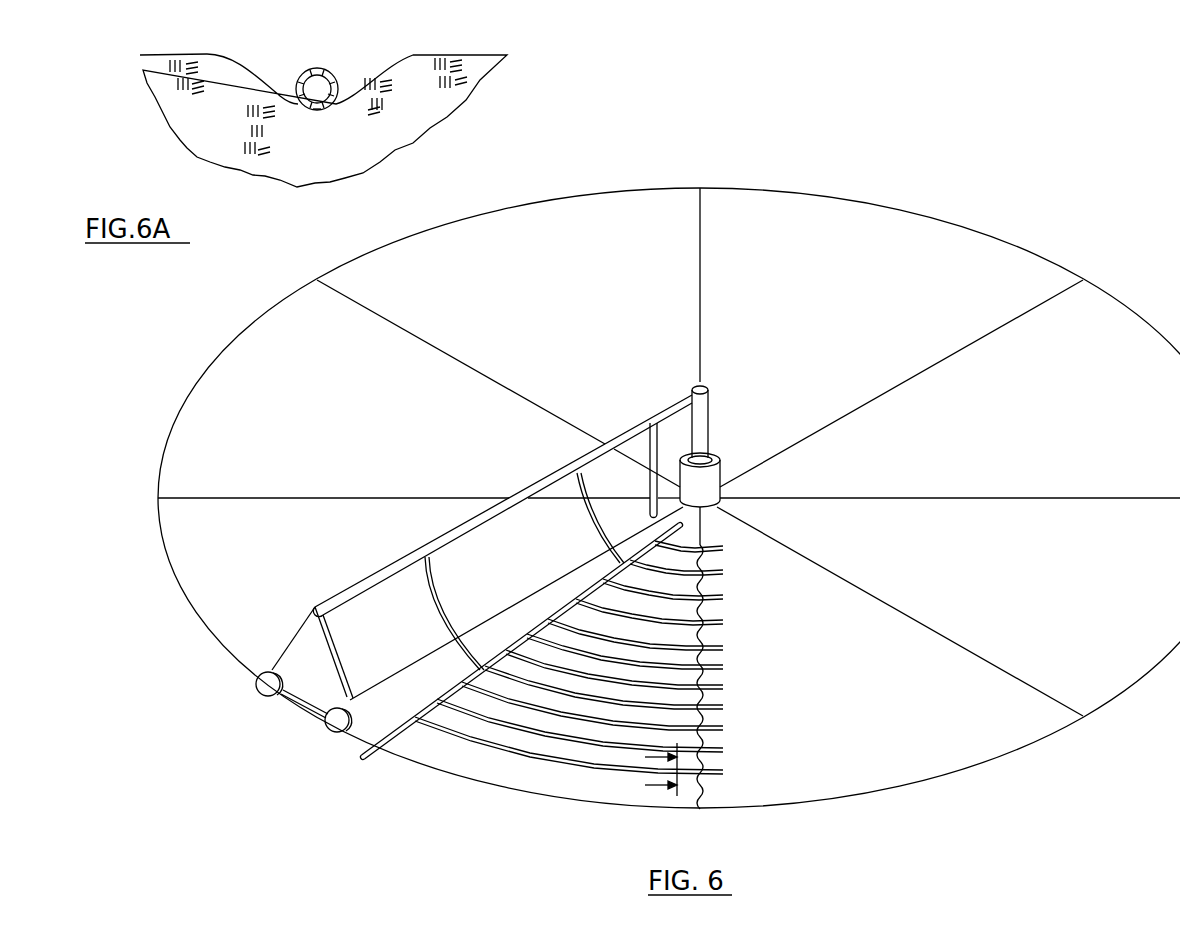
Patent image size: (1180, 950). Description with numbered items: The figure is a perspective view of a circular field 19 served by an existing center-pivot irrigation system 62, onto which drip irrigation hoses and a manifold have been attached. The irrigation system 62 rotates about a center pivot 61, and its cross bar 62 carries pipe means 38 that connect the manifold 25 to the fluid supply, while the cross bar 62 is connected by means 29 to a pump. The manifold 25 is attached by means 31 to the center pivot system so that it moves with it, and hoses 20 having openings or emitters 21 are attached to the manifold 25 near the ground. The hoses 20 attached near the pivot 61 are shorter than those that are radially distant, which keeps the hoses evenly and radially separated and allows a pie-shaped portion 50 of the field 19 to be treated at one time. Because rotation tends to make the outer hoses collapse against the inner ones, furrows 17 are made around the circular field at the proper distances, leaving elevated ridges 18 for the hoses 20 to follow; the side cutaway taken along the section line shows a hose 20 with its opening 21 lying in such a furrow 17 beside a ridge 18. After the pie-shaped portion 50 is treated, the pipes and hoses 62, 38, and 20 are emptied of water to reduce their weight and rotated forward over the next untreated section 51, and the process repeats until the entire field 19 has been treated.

In FIG. 6A, the furrows 17 is at (296, 102).
In FIG. 6A, the elevated ridges 18 is at (206, 54).
In FIG. 6, the elevated ridges 18 is at (706, 590).
In FIG. 6, the field 19 is at (880, 796).
In FIG. 6A, the hoses 20 is at (328, 72).
In FIG. 6, the hoses 20 is at (716, 547).
In FIG. 6A, the openings 21 is at (316, 110).
In FIG. 6, the manifold 25 is at (375, 752).
In FIG. 6, the means 29 is at (704, 412).
In FIG. 6, the means 31 is at (650, 478).
In FIG. 6, the pipe means 38 is at (445, 600).
In FIG. 6, the pie-shaped portion 50 is at (545, 770).
In FIG. 6, the next untreated section 51 is at (212, 583).
In FIG. 6, the center pivot 61 is at (716, 477).
In FIG. 6, the irrigation system 62 is at (538, 484).